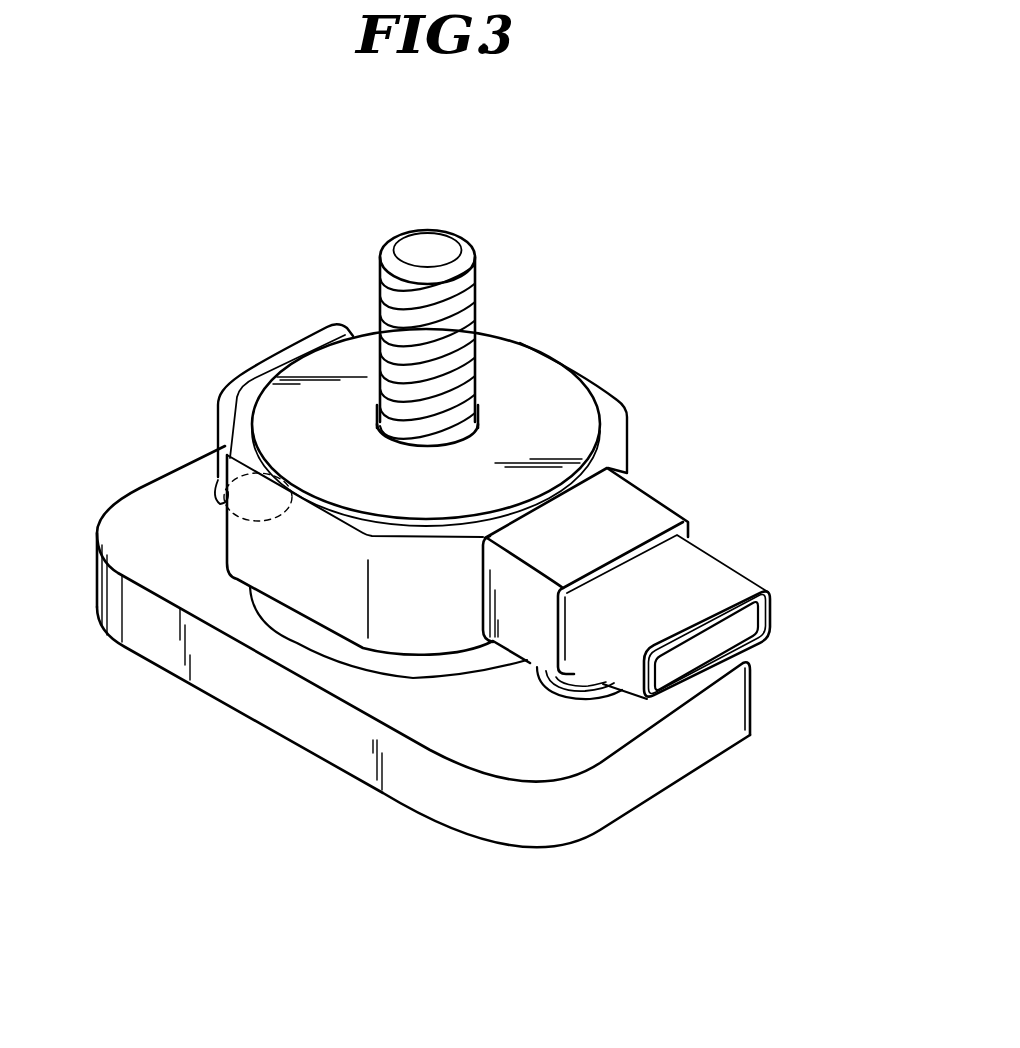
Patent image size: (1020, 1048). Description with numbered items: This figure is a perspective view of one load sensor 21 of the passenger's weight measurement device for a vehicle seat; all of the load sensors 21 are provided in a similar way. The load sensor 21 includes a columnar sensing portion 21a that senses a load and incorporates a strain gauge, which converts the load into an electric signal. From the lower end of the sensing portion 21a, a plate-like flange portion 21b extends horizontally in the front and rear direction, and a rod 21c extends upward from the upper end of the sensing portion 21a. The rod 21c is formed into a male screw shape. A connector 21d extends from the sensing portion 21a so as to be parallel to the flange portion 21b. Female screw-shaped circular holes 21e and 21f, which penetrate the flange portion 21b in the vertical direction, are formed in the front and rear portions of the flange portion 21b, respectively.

The load sensor 21 is at (641, 271).
The sensing portion 21a is at (335, 598).
The flange portion 21b is at (410, 797).
The rod 21c is at (472, 291).
The connector 21d is at (702, 575).
The circular hole 21e is at (222, 487).
The circular hole 21f is at (568, 693).